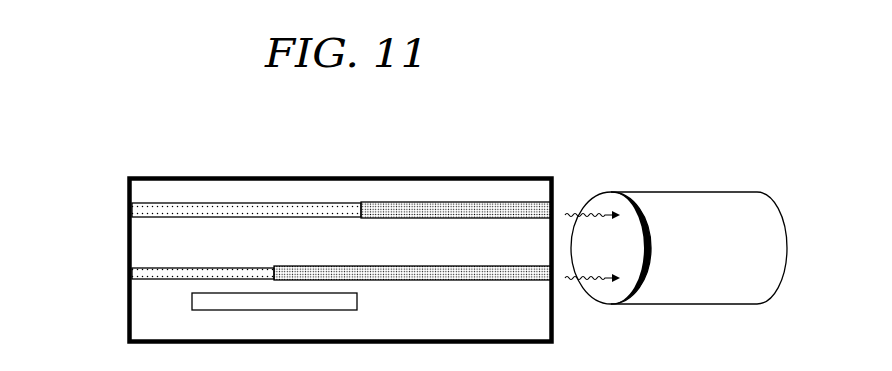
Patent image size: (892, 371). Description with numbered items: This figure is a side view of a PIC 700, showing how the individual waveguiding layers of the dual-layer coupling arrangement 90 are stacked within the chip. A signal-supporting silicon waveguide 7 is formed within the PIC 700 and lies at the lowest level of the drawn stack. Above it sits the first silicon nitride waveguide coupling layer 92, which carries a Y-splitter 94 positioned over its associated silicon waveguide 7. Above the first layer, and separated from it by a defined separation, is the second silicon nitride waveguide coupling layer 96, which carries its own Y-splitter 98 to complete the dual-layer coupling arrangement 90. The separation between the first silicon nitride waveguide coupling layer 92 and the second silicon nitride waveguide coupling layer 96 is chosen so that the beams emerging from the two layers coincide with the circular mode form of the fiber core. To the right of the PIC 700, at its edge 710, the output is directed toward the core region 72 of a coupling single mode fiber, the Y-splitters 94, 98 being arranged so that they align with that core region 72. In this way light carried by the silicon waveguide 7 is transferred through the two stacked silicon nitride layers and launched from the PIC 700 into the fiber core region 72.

The PIC 700 is at (218, 177).
The dual-layer coupling arrangement 90 is at (404, 156).
The second silicon nitride waveguide coupling layer 96 is at (128, 209).
The Y-splitter 98 is at (448, 216).
The first silicon nitride waveguide coupling layer 92 is at (128, 270).
The Y-splitter 94 is at (480, 280).
The signal-supporting waveguide 7 is at (192, 301).
The window 710 is at (556, 186).
The core region 72 is at (672, 298).